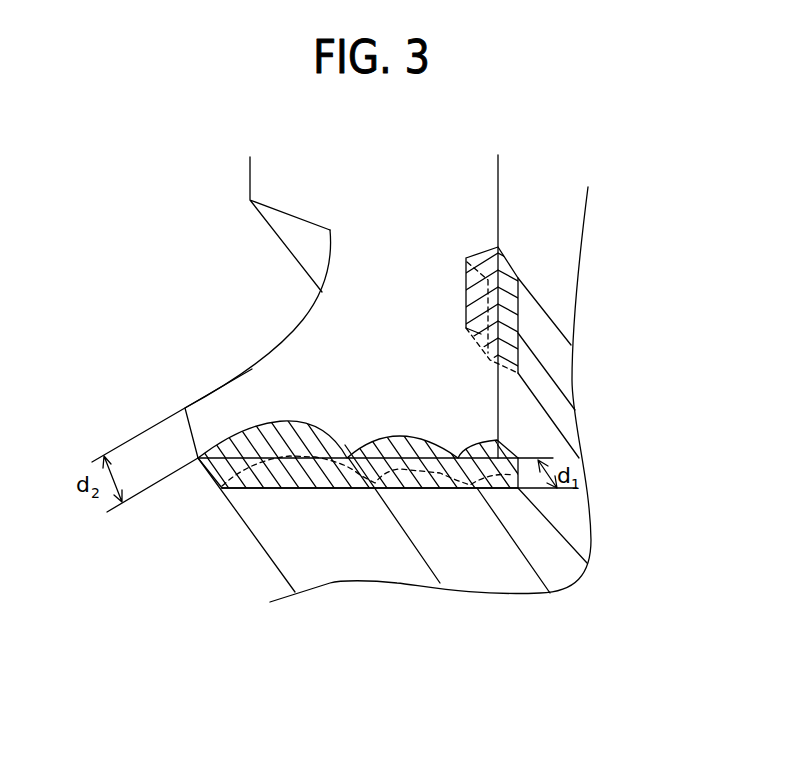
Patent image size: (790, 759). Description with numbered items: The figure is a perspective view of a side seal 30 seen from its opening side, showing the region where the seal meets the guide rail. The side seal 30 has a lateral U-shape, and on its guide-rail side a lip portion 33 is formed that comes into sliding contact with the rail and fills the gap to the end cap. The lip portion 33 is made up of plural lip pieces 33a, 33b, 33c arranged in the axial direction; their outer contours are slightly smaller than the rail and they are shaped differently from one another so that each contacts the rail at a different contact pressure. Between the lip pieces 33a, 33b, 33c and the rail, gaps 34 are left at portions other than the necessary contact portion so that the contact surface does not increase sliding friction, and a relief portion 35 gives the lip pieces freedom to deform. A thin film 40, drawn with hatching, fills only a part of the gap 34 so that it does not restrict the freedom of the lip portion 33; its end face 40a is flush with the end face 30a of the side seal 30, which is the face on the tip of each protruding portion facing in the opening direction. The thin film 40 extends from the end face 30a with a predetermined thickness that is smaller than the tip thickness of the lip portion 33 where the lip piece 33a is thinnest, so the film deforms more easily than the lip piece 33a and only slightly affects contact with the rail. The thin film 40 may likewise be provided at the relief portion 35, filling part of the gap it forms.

The side seal 30 is at (204, 307).
The end face of the side seal 30a is at (215, 413).
The lip portion 33 is at (306, 588).
The lip piece 33a is at (198, 458).
The lip piece 33b is at (347, 458).
The lip piece 33c is at (458, 488).
The gap 34 is at (462, 570).
The relief portion 35 is at (343, 436).
The thin film 40 is at (368, 390).
The end face of the thin film 40a is at (236, 446).